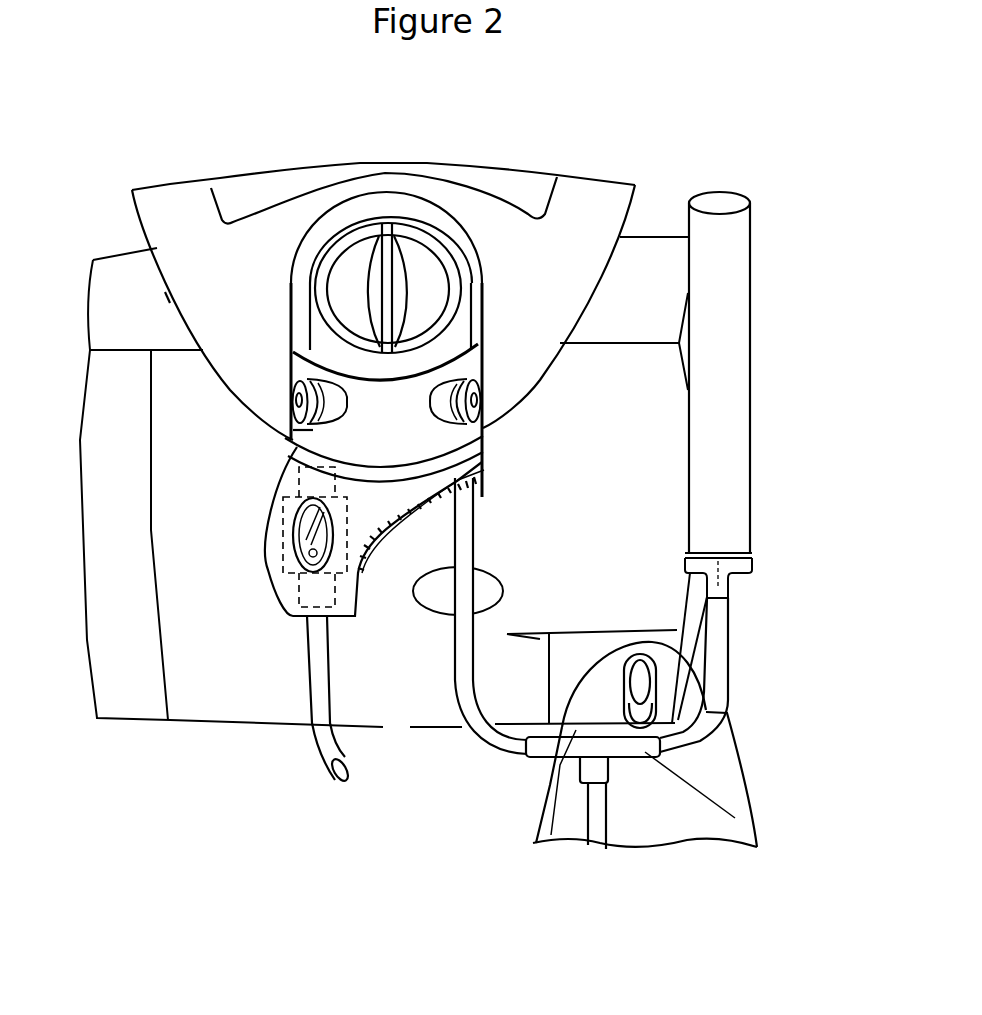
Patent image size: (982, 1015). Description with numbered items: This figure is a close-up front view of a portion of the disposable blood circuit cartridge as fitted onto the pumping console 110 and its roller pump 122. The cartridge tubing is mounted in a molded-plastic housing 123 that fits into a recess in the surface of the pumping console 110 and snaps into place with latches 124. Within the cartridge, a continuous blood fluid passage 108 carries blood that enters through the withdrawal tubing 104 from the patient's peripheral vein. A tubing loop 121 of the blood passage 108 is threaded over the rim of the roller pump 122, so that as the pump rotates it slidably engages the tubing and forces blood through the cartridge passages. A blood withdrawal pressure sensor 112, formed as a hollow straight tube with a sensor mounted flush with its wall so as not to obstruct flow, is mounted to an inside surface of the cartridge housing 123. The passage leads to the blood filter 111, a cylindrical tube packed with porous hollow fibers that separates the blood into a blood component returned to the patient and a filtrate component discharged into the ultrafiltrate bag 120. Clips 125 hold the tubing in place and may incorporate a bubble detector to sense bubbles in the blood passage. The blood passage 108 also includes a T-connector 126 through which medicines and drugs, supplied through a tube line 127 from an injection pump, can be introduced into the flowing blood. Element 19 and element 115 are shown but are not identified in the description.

The slot 19 is at (728, 713).
The withdrawal tubing 104 is at (323, 710).
The blood fluid passage 108 is at (720, 622).
The pumping console 110 is at (592, 489).
The blood filter 111 is at (710, 473).
The blood withdrawal pressure sensor 112 is at (297, 560).
The cap 115 is at (752, 573).
The ultrafiltrate bag 120 is at (673, 818).
The tubing loop 121 is at (483, 282).
The roller pump 122 is at (443, 344).
The cartridge housing 123 is at (354, 433).
The latches 124 is at (292, 398).
The clips 125 is at (441, 488).
The T-connector 126 is at (630, 743).
The tube line 127 is at (588, 818).